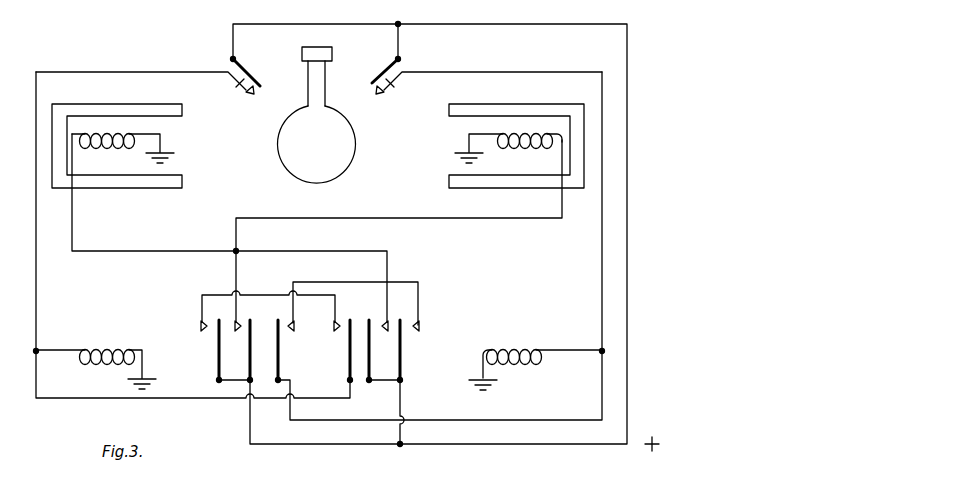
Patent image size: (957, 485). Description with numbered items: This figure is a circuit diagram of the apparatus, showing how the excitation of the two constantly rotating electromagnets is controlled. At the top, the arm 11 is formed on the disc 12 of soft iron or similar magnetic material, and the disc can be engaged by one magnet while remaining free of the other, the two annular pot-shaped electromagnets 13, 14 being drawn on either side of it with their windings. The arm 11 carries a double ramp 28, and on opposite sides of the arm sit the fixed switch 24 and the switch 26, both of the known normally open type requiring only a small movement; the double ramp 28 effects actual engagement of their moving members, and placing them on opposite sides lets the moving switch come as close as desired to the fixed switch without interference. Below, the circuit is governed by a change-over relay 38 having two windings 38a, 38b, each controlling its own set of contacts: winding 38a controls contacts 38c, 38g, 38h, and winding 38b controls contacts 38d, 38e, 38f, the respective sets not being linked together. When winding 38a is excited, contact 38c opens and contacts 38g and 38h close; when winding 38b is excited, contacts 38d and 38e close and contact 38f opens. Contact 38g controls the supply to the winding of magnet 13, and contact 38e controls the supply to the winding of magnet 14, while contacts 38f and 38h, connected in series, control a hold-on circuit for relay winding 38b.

The arm 11 is at (312, 87).
The disc 12 is at (353, 139).
The electromagnet 13 is at (118, 148).
The electromagnet 14 is at (523, 148).
The fixed switch 24 is at (487, 81).
The switch 26 is at (148, 85).
The double ramp 28 is at (330, 55).
The change-over relay 38 is at (233, 383).
The relay winding 38a is at (513, 363).
The relay winding 38b is at (123, 341).
The contact 38c is at (340, 334).
The contact 38d is at (212, 333).
The contact 38e is at (245, 323).
The contact 38f is at (285, 332).
The contact 38g is at (375, 322).
The contact 38h is at (408, 335).